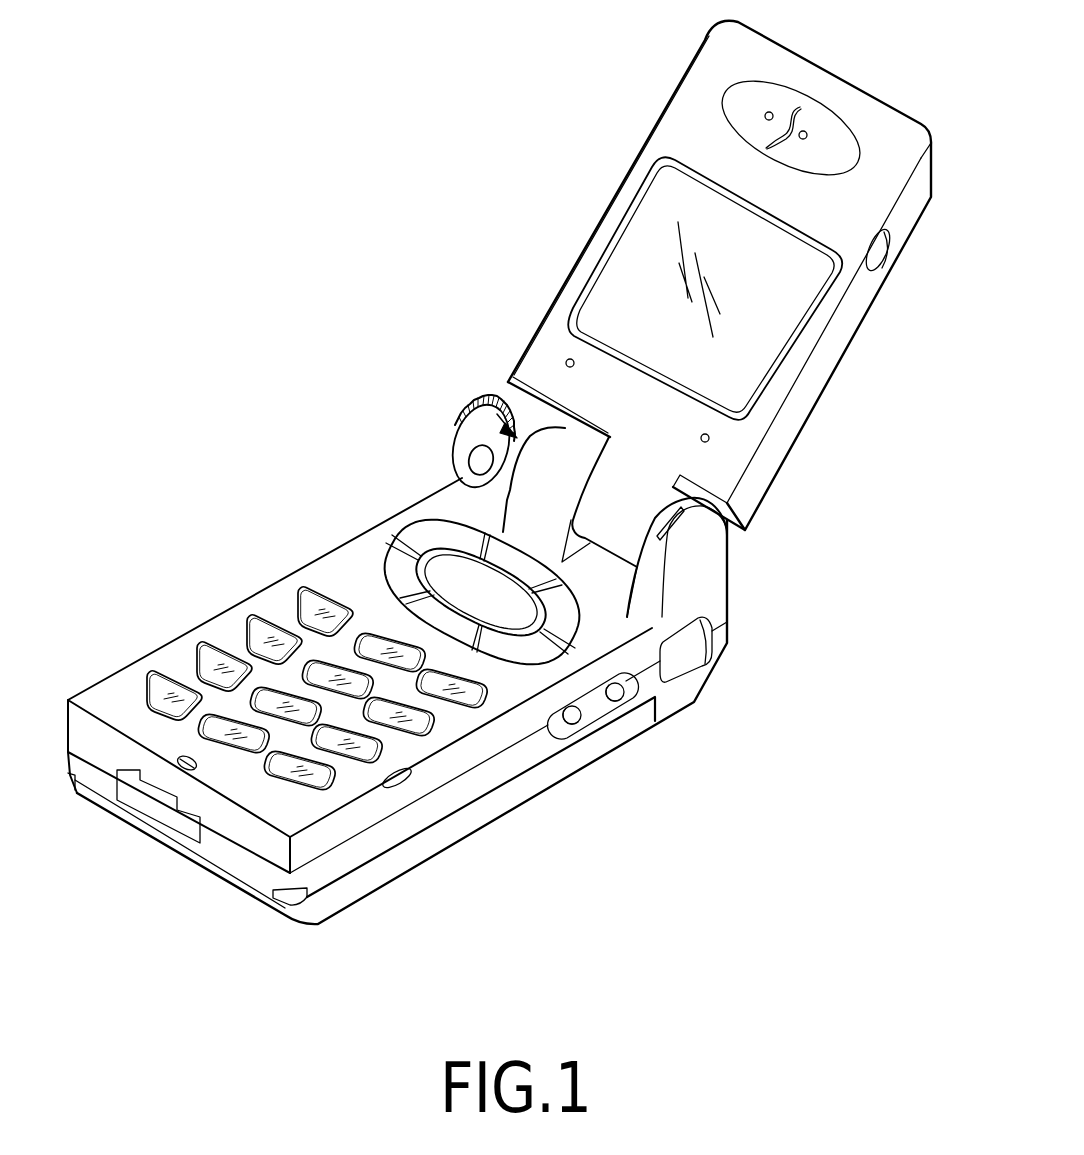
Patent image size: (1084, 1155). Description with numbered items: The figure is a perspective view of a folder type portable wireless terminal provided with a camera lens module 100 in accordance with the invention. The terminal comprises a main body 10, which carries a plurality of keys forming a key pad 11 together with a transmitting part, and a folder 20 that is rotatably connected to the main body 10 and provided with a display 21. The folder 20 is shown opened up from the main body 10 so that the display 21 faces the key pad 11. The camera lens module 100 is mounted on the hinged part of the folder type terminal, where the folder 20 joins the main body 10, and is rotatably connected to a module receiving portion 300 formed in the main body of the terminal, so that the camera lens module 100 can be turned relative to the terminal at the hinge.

The main body 10 is at (587, 750).
The key pad 11 is at (215, 652).
The folder 20 is at (820, 352).
The display 21 is at (612, 263).
The camera lens module 100 is at (478, 398).
The module receiving portion 300 is at (561, 445).